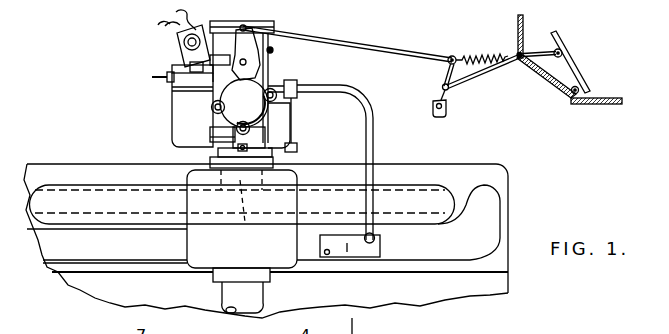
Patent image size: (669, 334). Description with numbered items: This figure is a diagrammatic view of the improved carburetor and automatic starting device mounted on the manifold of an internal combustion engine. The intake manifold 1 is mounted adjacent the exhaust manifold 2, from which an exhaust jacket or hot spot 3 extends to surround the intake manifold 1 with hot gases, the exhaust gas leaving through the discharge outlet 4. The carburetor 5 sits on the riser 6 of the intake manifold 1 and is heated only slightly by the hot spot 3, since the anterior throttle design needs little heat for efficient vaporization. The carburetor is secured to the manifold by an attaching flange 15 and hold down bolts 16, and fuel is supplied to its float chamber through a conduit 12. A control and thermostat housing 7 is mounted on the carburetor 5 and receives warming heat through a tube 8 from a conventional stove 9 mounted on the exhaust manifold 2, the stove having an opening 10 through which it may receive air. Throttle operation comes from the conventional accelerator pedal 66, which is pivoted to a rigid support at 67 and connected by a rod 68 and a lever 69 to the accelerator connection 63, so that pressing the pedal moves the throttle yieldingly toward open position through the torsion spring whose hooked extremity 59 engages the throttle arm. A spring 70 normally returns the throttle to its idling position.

The intake manifold 1 is at (408, 185).
The exhaust manifold 2 is at (486, 222).
The exhaust jacket or hot spot 3 is at (197, 262).
The exhaust gas discharge outlet 4 is at (258, 300).
The carburetor 5 is at (168, 108).
The riser 6 is at (246, 212).
The control and thermostat housing 7 is at (258, 105).
The tube 8 is at (365, 142).
The stove 9 is at (347, 250).
The opening 10 is at (320, 250).
The conduit 12 is at (162, 74).
The attaching flange 15 is at (212, 157).
The hold down bolts 16 is at (237, 151).
The hooked extremity 59 is at (453, 57).
The accelerator connection 63 is at (354, 28).
The accelerator pedal 66 is at (577, 62).
The pivot 67 is at (573, 98).
The rod 68 is at (487, 75).
The lever 69 is at (443, 82).
The spring 70 is at (497, 40).